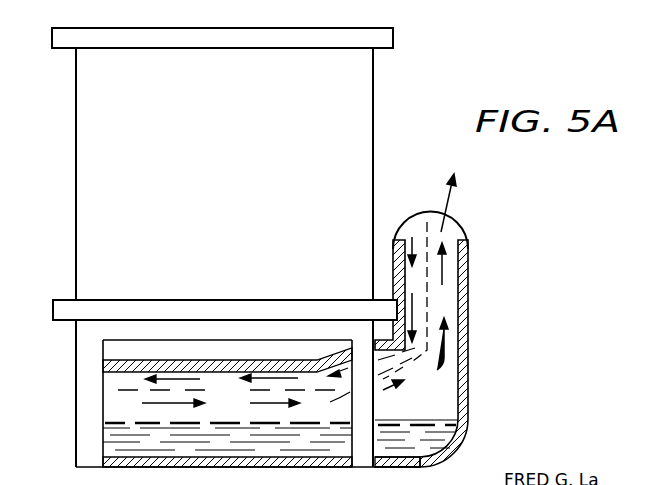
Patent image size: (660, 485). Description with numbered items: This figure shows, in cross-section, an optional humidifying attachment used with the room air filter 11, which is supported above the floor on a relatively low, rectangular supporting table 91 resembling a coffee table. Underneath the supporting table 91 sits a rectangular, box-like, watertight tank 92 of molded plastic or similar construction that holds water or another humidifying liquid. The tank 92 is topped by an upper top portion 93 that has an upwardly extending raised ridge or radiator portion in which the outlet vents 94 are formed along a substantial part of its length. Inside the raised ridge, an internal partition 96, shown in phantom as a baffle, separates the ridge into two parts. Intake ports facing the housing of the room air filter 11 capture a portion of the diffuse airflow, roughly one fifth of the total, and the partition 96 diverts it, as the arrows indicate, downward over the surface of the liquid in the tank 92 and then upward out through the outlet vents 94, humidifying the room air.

The room air filter 11 is at (349, 113).
The supporting table 91 is at (97, 331).
The watertight tank 92 is at (462, 432).
The top portion 93 is at (468, 351).
The outlet vents 94 is at (441, 232).
The internal partition 96 is at (428, 278).